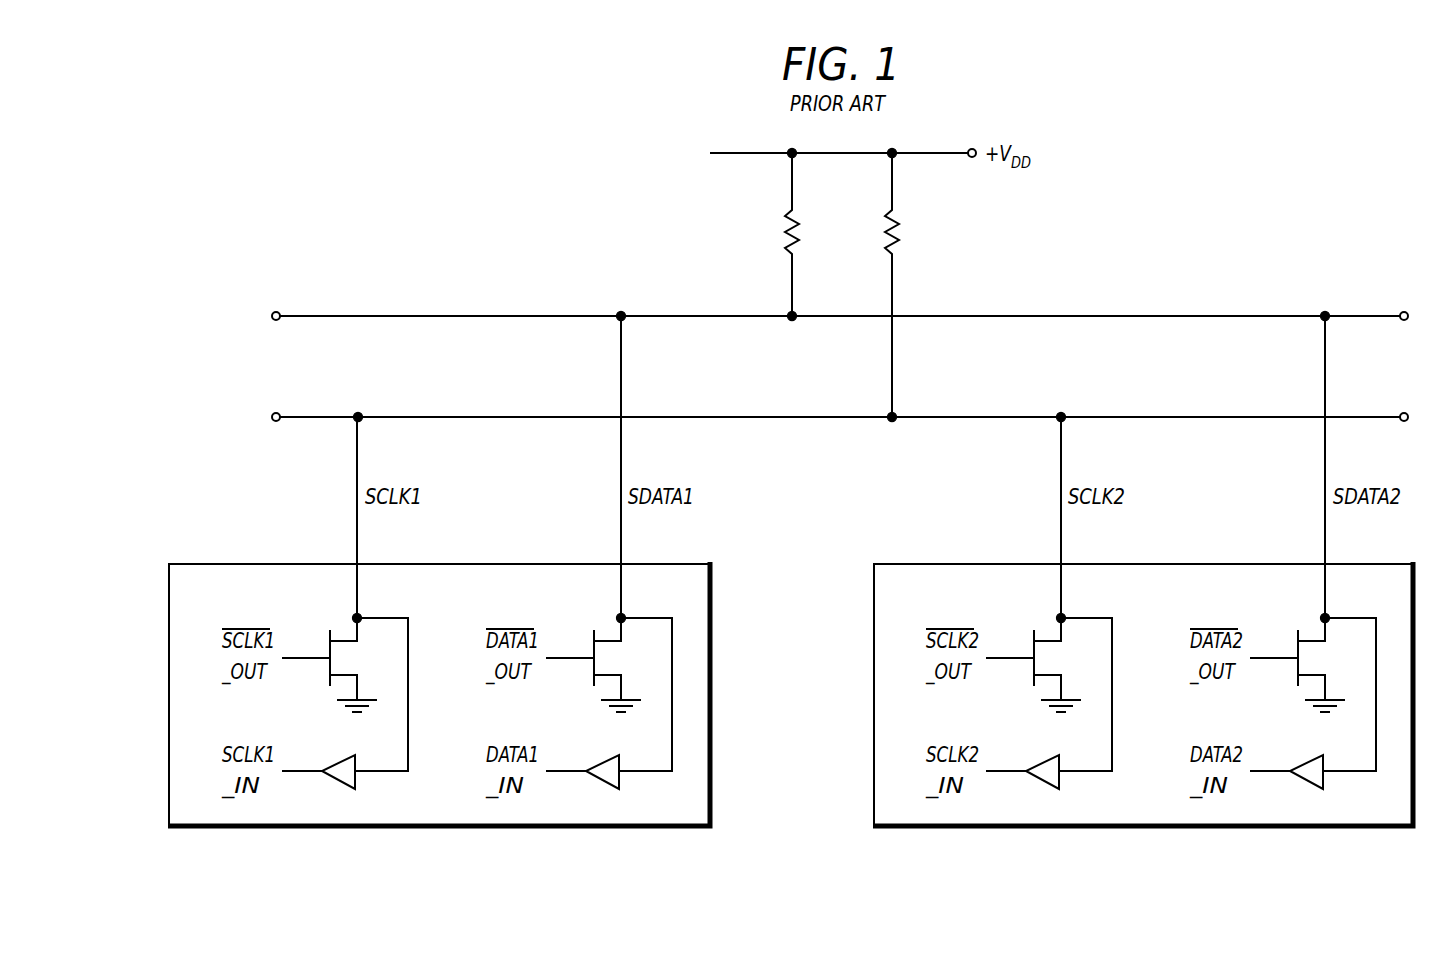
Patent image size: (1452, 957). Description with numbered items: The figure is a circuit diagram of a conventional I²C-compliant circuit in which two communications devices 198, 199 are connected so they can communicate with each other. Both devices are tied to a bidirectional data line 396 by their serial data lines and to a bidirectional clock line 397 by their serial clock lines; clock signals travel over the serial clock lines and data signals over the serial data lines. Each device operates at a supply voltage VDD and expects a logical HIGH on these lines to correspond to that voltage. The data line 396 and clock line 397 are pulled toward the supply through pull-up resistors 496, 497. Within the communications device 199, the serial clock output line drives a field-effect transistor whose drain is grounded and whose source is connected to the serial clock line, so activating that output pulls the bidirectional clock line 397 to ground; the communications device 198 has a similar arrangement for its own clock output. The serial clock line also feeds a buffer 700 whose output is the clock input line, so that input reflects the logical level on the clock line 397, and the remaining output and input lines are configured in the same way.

The pull-up resistor 496 is at (786, 229).
The pull-up resistor 497 is at (898, 232).
The bidirectional data line 396 is at (313, 315).
The bidirectional clock line 397 is at (313, 416).
The buffer 700 is at (823, 812).
The communications device 199 is at (458, 828).
The communications device 198 is at (1172, 828).